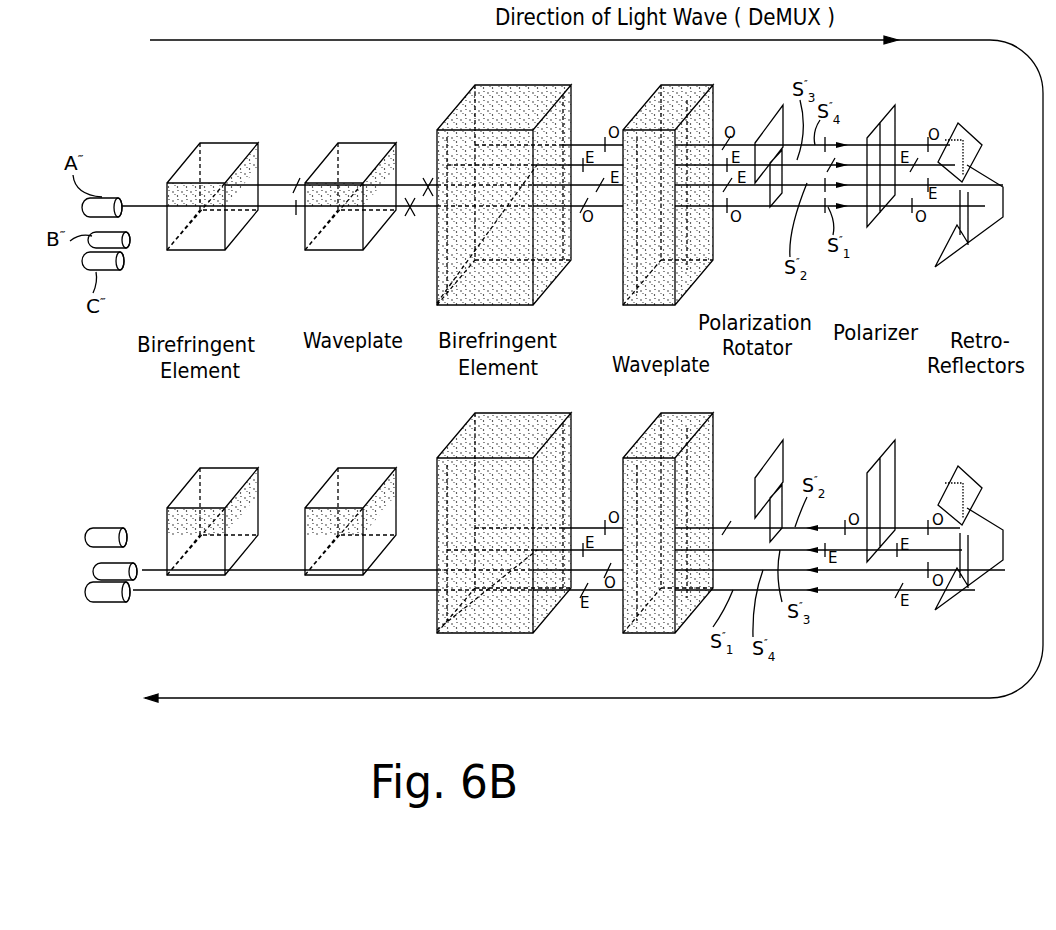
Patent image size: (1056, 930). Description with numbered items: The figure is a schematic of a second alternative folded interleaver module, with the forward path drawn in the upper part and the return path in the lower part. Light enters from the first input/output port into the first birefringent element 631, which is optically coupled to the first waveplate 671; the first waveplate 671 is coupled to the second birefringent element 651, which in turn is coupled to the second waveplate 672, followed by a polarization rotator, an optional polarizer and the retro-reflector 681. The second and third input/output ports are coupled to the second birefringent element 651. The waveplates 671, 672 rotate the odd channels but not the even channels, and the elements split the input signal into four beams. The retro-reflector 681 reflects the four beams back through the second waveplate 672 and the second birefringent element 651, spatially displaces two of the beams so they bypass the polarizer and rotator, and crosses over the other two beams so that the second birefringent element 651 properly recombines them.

The first birefringent element 631 is at (232, 142).
The first waveplate 671 is at (375, 143).
The second birefringent element 651 is at (493, 85).
The second waveplate 672 is at (680, 85).
The retro-reflector 681 is at (992, 132).